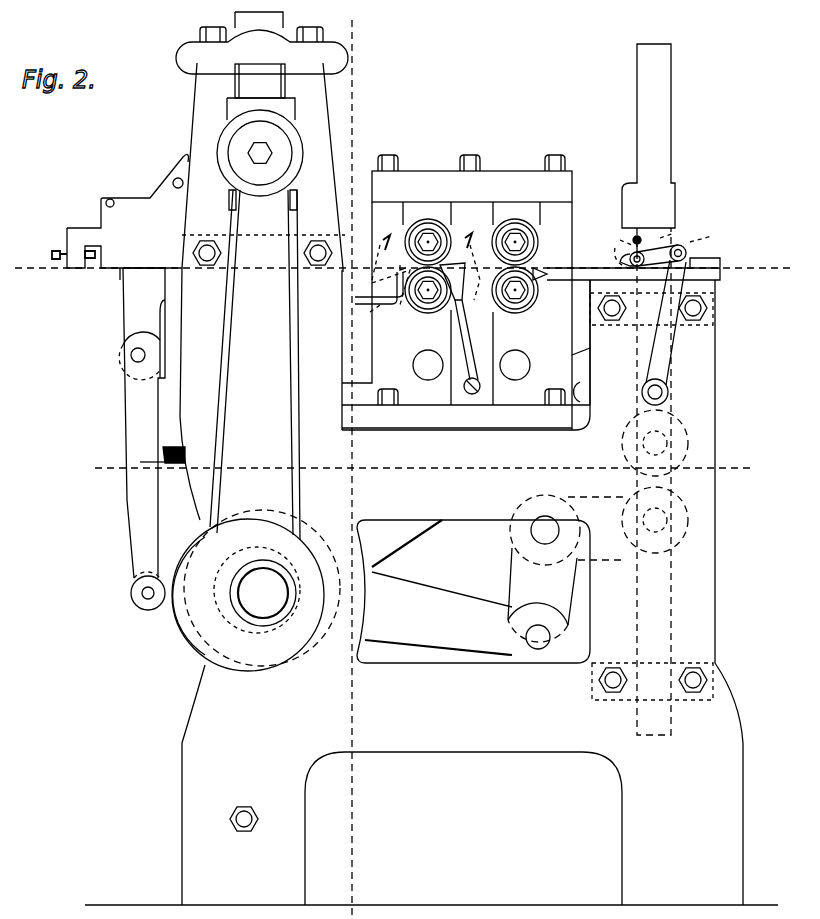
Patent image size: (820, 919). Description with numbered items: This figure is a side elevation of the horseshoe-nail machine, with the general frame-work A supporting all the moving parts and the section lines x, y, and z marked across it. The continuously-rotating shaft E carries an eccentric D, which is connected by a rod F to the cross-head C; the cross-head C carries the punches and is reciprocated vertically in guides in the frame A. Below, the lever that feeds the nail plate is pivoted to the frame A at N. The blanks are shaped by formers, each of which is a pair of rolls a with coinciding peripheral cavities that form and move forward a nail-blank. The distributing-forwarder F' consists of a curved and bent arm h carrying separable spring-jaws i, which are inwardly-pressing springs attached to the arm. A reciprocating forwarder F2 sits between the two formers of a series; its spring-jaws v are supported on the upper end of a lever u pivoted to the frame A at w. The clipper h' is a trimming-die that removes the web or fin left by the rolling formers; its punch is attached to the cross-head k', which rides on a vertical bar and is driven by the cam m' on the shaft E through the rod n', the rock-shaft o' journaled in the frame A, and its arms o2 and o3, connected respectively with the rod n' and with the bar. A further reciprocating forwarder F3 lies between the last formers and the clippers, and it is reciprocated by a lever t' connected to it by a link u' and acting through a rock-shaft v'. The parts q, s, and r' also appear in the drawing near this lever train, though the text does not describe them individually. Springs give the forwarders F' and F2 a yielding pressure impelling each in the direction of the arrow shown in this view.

The cross-head C is at (262, 66).
The cross-head k' is at (648, 136).
The distributing-forwarder F' is at (384, 275).
The curved and bent arm h is at (379, 288).
The clipper h' is at (534, 277).
The roll a is at (471, 264).
The spring-jaw i is at (403, 271).
The spring-jaw v is at (452, 281).
The reciprocating forwarder F2 is at (473, 272).
The lever u is at (466, 340).
The pivot w is at (481, 386).
The frame-work A is at (466, 307).
The pivot N is at (133, 439).
The rod F is at (256, 325).
The section line x x is at (396, 268).
The section line y y is at (415, 468).
The section line z z is at (350, 463).
The reciprocating forwarder F3 is at (634, 239).
The link q is at (617, 257).
The stem s is at (644, 243).
The link u' is at (653, 255).
The lever t' is at (666, 322).
The rock-shaft v' is at (667, 392).
The rod r' is at (655, 481).
The rock-shaft o' is at (545, 530).
The arm o2 is at (542, 598).
The arm o3 is at (596, 528).
The rod n' is at (473, 591).
The cam m' is at (262, 585).
The eccentric D is at (248, 595).
The shaft E is at (257, 590).